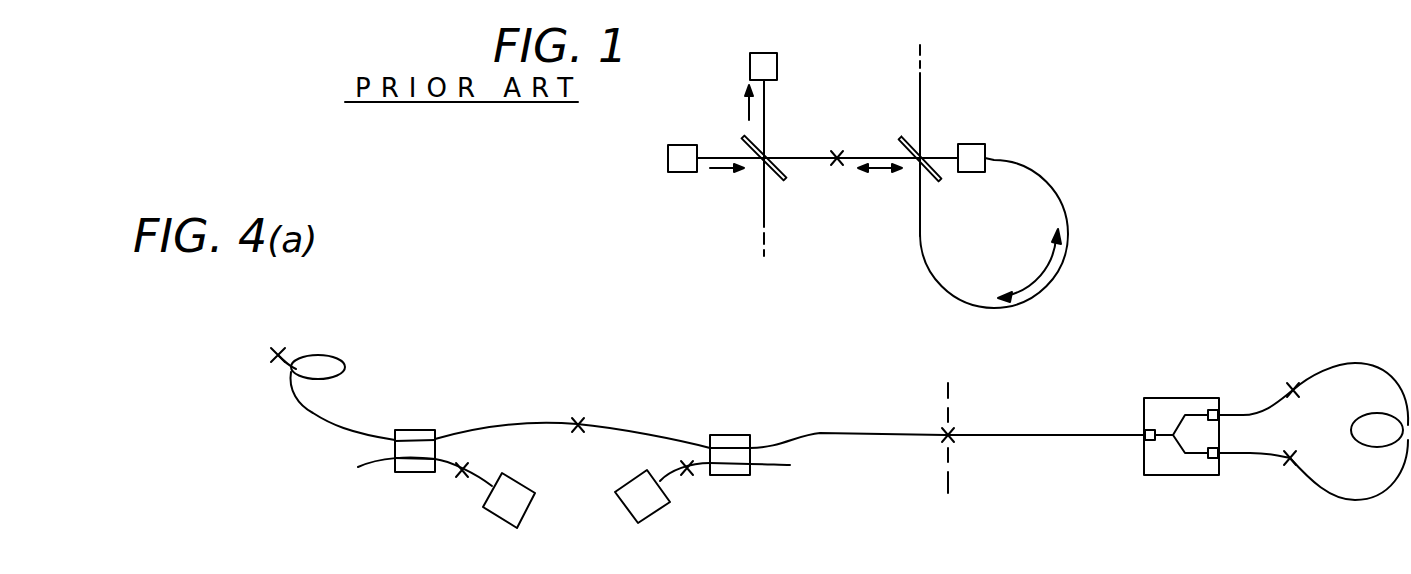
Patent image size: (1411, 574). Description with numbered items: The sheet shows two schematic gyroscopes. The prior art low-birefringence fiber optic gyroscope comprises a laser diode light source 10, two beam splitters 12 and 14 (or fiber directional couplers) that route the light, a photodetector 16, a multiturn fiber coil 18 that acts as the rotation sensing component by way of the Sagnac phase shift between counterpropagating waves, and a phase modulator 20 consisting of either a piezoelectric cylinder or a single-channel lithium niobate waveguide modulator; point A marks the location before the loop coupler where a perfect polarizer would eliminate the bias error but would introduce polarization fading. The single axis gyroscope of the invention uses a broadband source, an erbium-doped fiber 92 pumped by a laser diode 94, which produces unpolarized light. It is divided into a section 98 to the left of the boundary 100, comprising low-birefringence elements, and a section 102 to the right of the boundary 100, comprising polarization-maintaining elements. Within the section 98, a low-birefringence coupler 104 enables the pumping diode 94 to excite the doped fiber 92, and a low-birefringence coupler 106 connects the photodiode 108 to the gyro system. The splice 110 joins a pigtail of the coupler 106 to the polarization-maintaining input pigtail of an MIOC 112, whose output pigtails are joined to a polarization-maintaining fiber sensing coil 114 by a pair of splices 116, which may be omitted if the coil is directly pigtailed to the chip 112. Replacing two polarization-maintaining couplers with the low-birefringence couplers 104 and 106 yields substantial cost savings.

In FIG. 1, the laser diode light source 10 is at (668, 158).
In FIG. 1, the beam splitter 12 is at (784, 179).
In FIG. 1, the beam splitter 14 is at (902, 138).
In FIG. 1, the photodetector 16 is at (750, 63).
In FIG. 1, the multiturn fiber coil 18 is at (1035, 170).
In FIG. 1, the phase modulator 20 is at (968, 144).
In FIG. 1, the point A is at (840, 168).
In FIG. 4a, the Er-doped fiber 92 is at (312, 417).
In FIG. 4a, the laser diode 94 is at (494, 520).
In FIG. 4a, the section 98 is at (612, 380).
In FIG. 4a, the dividing point 100 is at (950, 388).
In FIG. 4a, the section 102 is at (1067, 396).
In FIG. 4a, the low-birefringence coupler 104 is at (417, 430).
In FIG. 4a, the low-birefringence coupler 106 is at (733, 435).
In FIG. 4a, the photodiode 108 is at (652, 512).
In FIG. 4a, the splice 110 is at (943, 438).
In FIG. 4a, the MIOC 112 is at (1188, 477).
In FIG. 4a, the PM fiber sensing coil 114 is at (1353, 500).
In FIG. 4a, the splices 116 is at (1290, 458).